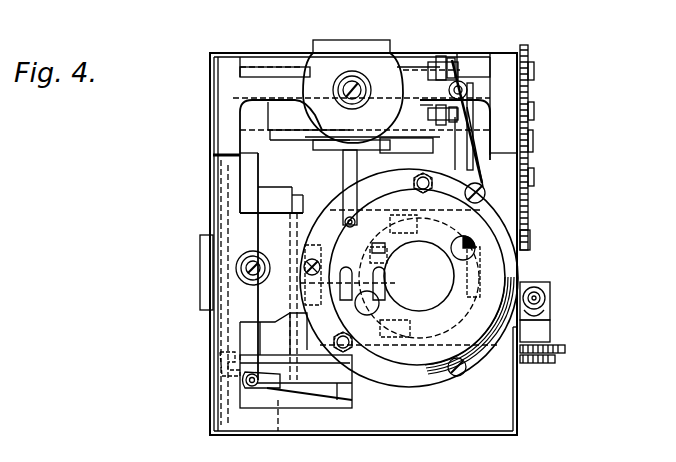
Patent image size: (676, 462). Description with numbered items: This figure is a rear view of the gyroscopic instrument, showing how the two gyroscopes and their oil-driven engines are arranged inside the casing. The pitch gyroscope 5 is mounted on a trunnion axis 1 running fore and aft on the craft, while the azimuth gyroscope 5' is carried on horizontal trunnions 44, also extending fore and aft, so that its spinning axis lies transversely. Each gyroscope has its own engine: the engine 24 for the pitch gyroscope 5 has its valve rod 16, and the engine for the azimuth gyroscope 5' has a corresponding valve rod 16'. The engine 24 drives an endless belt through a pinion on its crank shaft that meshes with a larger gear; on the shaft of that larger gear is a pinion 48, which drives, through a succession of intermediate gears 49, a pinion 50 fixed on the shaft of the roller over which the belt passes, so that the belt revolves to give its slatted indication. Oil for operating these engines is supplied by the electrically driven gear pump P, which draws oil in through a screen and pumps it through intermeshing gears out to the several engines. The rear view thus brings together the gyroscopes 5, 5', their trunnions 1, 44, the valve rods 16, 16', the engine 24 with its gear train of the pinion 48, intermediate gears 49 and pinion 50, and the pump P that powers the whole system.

The trunnion axis 1 is at (338, 86).
The pitch gyroscope 5 is at (361, 87).
The azimuth gyroscope 5' is at (231, 292).
The valve rod 16 is at (383, 260).
The valve rod 16' is at (400, 247).
The engine 24 is at (452, 153).
The horizontal trunnions 44 is at (255, 258).
The pinion 48 is at (530, 245).
The intermediate gears 49 is at (531, 143).
The pinion 50 is at (528, 50).
The gear pump P is at (438, 378).